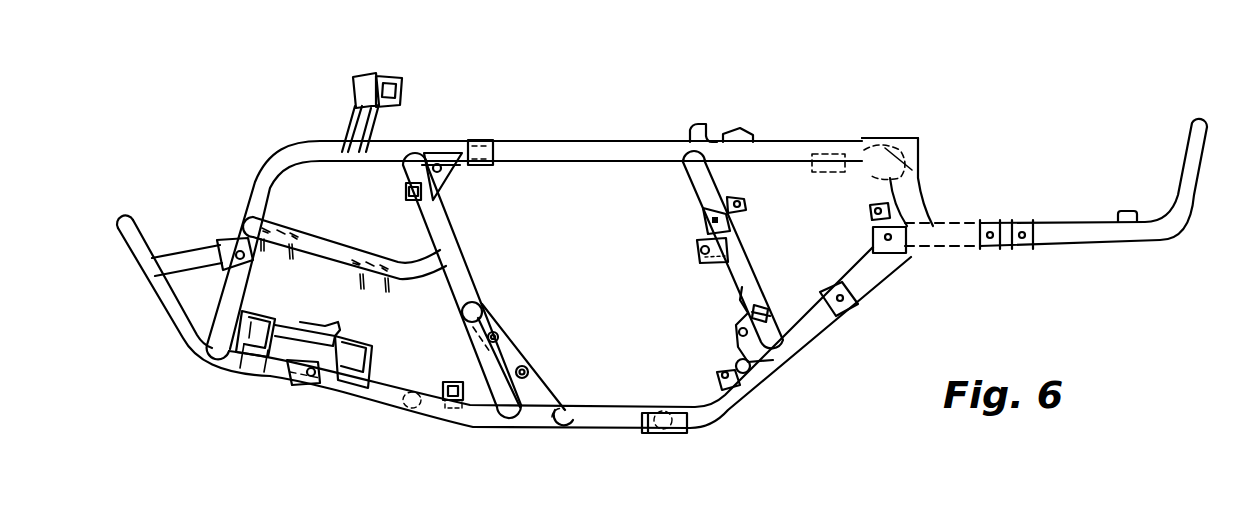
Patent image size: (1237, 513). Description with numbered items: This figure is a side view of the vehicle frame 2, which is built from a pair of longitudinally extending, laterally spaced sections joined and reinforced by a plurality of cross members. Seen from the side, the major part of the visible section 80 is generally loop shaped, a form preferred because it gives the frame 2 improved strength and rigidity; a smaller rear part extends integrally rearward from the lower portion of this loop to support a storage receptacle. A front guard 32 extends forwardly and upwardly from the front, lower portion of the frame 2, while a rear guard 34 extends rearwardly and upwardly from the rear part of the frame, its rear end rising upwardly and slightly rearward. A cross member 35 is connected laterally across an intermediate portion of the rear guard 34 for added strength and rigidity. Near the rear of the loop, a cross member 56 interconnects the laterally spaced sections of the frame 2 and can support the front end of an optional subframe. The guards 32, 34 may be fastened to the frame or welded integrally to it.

The frame 2 is at (473, 113).
The section 80 is at (580, 141).
The cross member 56 is at (866, 160).
The rear guard 34 is at (1102, 241).
The cross member 35 is at (1121, 210).
The front guard 32 is at (138, 265).